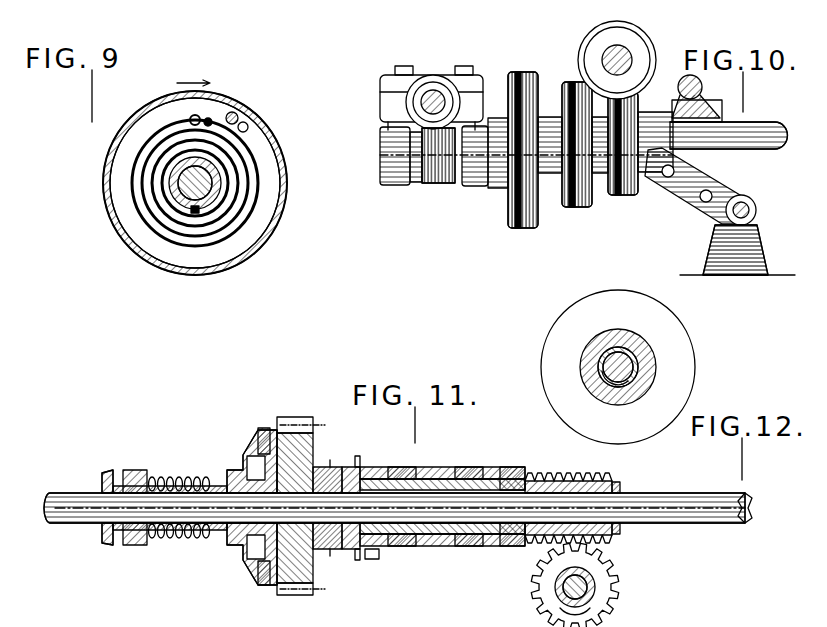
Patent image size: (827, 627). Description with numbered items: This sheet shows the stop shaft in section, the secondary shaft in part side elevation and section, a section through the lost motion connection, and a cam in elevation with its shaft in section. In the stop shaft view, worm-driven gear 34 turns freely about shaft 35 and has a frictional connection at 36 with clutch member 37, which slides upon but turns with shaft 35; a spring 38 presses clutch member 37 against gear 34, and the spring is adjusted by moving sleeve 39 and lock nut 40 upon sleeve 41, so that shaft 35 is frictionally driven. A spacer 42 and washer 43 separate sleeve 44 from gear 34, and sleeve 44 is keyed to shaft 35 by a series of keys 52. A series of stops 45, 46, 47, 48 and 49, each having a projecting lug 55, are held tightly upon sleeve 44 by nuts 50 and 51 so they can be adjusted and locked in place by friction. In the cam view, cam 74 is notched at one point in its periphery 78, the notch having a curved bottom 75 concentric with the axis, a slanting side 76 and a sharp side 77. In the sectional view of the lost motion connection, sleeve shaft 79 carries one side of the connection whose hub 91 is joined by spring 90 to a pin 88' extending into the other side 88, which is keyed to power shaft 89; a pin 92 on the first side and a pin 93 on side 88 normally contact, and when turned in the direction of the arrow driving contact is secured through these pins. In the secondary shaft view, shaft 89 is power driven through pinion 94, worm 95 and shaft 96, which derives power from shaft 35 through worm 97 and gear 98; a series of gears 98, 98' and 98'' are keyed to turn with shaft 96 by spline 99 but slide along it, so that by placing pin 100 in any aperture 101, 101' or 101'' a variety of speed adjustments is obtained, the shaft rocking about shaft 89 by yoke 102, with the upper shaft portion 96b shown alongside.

In FIG. 11, the gear 34 is at (310, 406).
In FIG. 10, the stop shaft 35 is at (602, 58).
In FIG. 11, the stop shaft 35 is at (315, 475).
In FIG. 11, the frictional connection 36 is at (264, 428).
In FIG. 11, the clutch member 37 is at (250, 446).
In FIG. 11, the spring 38 is at (190, 477).
In FIG. 11, the sleeve 39 is at (150, 477).
In FIG. 11, the lock nut 40 is at (130, 470).
In FIG. 11, the sleeve 41 is at (102, 475).
In FIG. 11, the spacer 42 is at (340, 468).
In FIG. 11, the washer 43 is at (352, 552).
In FIG. 11, the sleeve 44 is at (430, 467).
In FIG. 11, the stop 45 is at (390, 554).
In FIG. 11, the stop 46 is at (412, 548).
In FIG. 11, the stop 47 is at (436, 550).
In FIG. 11, the stop 48 is at (455, 548).
In FIG. 11, the stop 49 is at (490, 548).
In FIG. 11, the nut 50 is at (502, 475).
In FIG. 11, the nut 51 is at (518, 468).
In FIG. 11, the keys 52 is at (402, 467).
In FIG. 11, the projecting lug 55 is at (372, 560).
In FIG. 12, the cam 74 is at (688, 348).
In FIG. 12, the curved bottom 75 is at (616, 291).
In FIG. 12, the slanting side 76 is at (632, 290).
In FIG. 12, the sharp side 77 is at (602, 290).
In FIG. 12, the periphery 78 is at (563, 314).
In FIG. 9, the sleeve shaft 79 is at (215, 184).
In FIG. 9, the lost motion connection side 88 is at (195, 183).
In FIG. 9, the pin 88' is at (220, 101).
In FIG. 9, the power shaft 89 is at (170, 183).
In FIG. 10, the power shaft 89 is at (436, 100).
In FIG. 9, the spring 90 is at (256, 164).
In FIG. 9, the hub 91 is at (216, 200).
In FIG. 9, the pin 92 is at (240, 112).
In FIG. 9, the pin 93 is at (249, 127).
In FIG. 10, the pinion 94 is at (382, 88).
In FIG. 10, the worm 95 is at (438, 184).
In FIG. 10, the shaft 96 is at (381, 158).
In FIG. 11, the shaft 96 is at (568, 590).
In FIG. 10, the shaft (upper) 96b is at (742, 150).
In FIG. 10, the worm 97 is at (637, 50).
In FIG. 11, the worm 97 is at (600, 478).
In FIG. 10, the gear 98 is at (628, 158).
In FIG. 11, the gear 98 is at (594, 585).
In FIG. 10, the gear 98' is at (580, 156).
In FIG. 10, the gear 98'' is at (533, 159).
In FIG. 10, the spline 99 is at (746, 122).
In FIG. 10, the pin 100 is at (758, 205).
In FIG. 10, the aperture 101 is at (743, 248).
In FIG. 10, the aperture 101' is at (695, 198).
In FIG. 10, the aperture 101'' is at (674, 209).
In FIG. 10, the yoke 102 is at (398, 188).